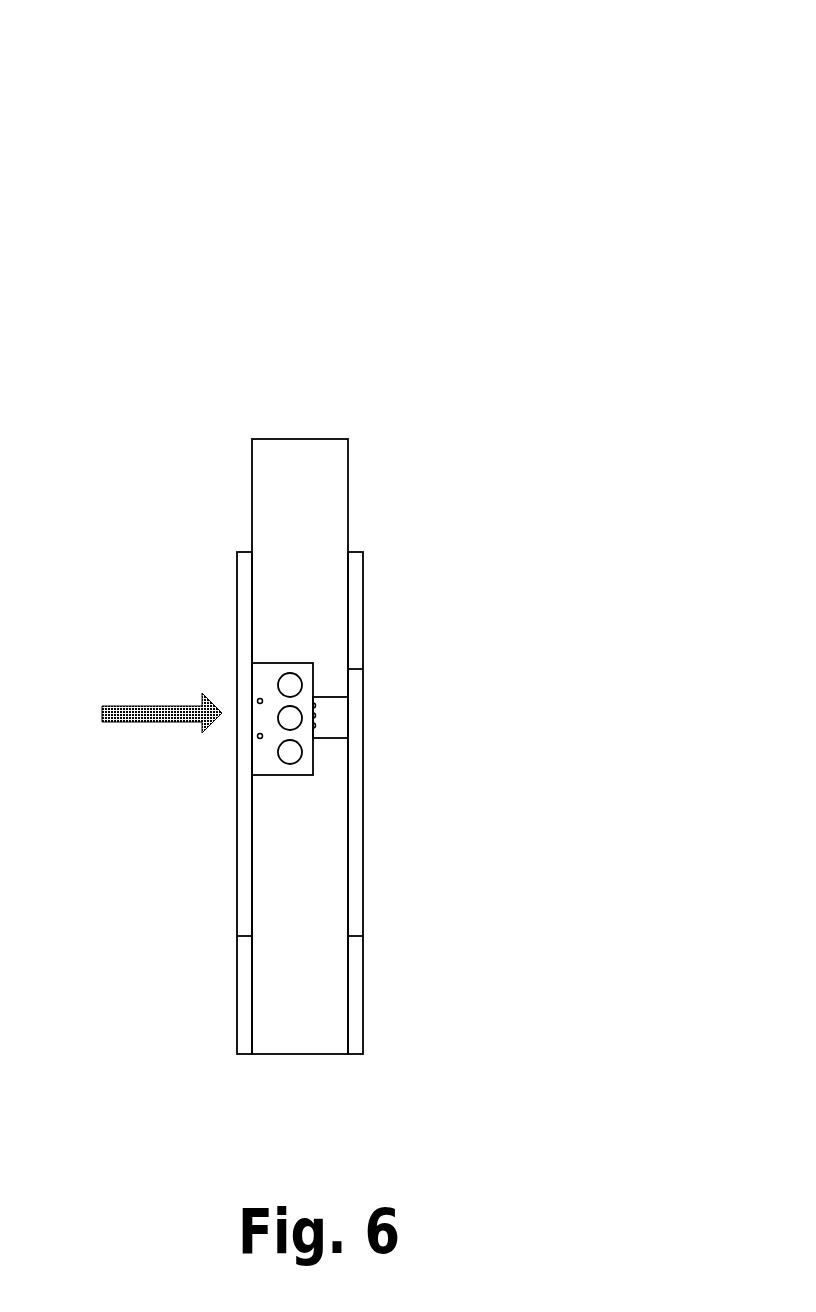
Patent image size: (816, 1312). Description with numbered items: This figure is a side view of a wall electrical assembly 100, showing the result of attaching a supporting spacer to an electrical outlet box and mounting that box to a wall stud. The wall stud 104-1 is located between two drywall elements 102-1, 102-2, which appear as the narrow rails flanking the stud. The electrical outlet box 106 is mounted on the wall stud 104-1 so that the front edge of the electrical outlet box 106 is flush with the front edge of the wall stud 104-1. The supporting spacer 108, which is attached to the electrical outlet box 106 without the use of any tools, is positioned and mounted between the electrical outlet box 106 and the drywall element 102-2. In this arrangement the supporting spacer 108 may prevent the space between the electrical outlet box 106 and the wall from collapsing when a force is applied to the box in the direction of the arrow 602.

The wall electrical assembly 100 is at (331, 98).
The wall stud 104-1 is at (283, 485).
The drywall element 102-1 is at (247, 592).
The drywall element 102-2 is at (355, 592).
The electrical outlet box 106 is at (273, 676).
The supporting spacer 108 is at (331, 719).
The arrow 602 is at (175, 712).